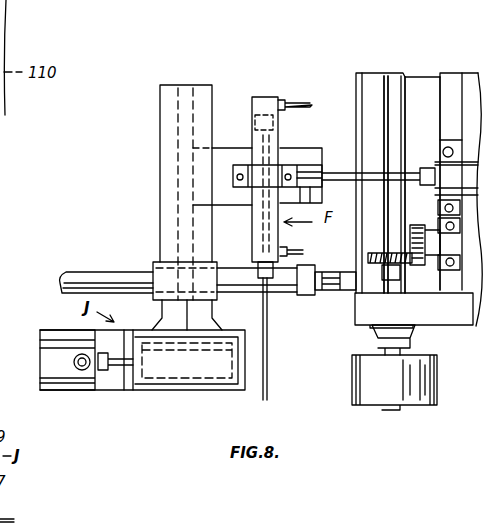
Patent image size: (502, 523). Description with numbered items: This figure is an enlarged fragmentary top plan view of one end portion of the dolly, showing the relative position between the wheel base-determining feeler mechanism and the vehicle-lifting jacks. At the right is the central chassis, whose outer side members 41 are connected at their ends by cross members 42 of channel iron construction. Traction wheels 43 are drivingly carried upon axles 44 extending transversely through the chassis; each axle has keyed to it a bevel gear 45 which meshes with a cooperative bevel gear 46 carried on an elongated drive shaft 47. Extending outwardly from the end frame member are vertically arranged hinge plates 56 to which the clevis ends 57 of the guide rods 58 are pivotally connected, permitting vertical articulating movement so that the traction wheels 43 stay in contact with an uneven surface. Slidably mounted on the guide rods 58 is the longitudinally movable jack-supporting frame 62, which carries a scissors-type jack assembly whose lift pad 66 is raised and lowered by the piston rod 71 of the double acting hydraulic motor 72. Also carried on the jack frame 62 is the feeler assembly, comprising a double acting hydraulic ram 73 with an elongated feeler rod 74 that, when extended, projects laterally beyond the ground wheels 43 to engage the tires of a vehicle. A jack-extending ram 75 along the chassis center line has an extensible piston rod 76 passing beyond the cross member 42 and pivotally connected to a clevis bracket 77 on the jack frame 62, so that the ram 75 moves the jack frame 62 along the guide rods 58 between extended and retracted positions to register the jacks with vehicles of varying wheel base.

The jack-supporting frame 62 is at (160, 144).
The guide rods 58 is at (95, 277).
The lift pad 66 is at (170, 368).
The double acting hydraulic motor 72 is at (57, 365).
The piston rod 71 is at (120, 368).
The double acting hydraulic ram 73 is at (252, 232).
The feeler rod 74 is at (268, 356).
The clevis bracket 77 is at (305, 148).
The extensible piston rod 76 is at (340, 172).
The clevis ends 57 is at (318, 296).
The hinge plates 56 is at (340, 296).
The cross members 42 is at (356, 73).
The jack-extending rams 75 is at (445, 175).
The axles 44 is at (393, 203).
The bevel gear 46 is at (415, 225).
The bevel gear 45 is at (412, 265).
The drive shaft 47 is at (463, 270).
The side members 41 is at (457, 327).
The traction wheels 43 is at (425, 405).